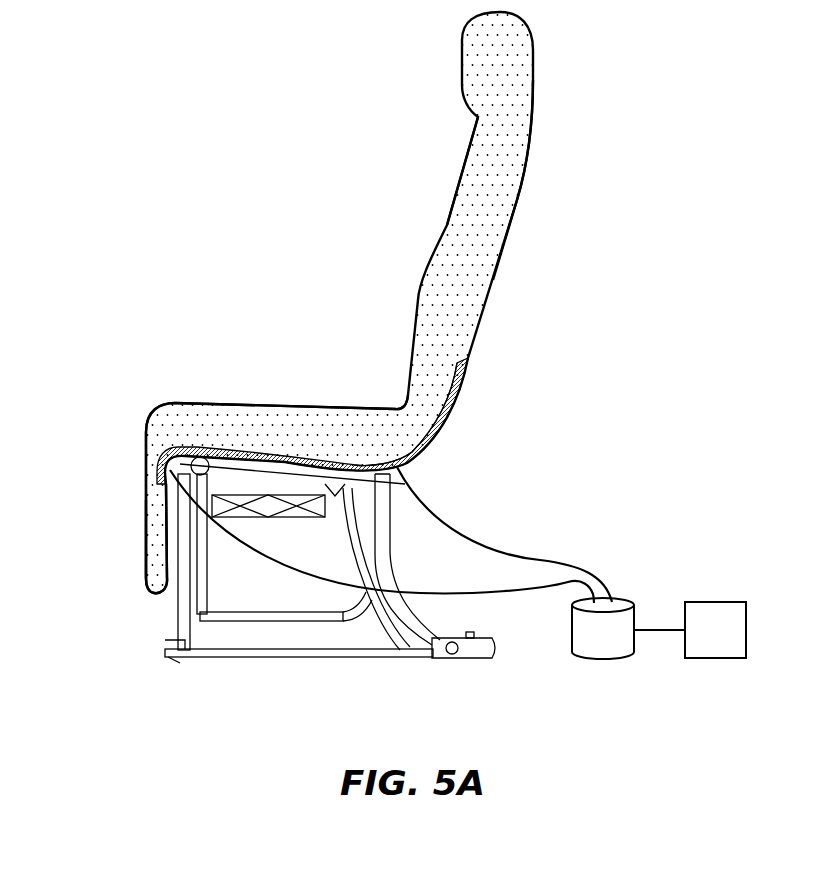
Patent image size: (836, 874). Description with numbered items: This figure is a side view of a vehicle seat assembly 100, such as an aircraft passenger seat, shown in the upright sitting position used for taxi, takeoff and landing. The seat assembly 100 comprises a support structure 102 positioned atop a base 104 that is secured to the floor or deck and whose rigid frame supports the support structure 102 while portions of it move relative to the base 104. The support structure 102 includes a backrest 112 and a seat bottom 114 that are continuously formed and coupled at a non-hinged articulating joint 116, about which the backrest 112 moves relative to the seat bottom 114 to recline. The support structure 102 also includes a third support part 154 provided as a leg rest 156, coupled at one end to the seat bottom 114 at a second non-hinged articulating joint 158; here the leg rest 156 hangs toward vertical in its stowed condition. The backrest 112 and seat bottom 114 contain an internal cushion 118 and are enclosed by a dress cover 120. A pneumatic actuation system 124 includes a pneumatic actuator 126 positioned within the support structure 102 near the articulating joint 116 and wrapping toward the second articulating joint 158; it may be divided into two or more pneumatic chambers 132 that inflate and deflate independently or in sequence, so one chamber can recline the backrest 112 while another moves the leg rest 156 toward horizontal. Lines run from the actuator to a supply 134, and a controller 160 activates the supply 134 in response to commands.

The vehicle seat assembly 100 is at (247, 202).
The support structure 102 is at (412, 290).
The base 104 is at (168, 606).
The backrest 112 is at (450, 215).
The seat bottom 114 is at (248, 400).
The articulating joint 116 is at (400, 403).
The internal cushion 118 is at (508, 165).
The dress cover 120 is at (515, 207).
The pneumatic actuation system 124 is at (656, 578).
The pneumatic actuator 126 is at (455, 412).
The pneumatic chambers 132 is at (435, 450).
The supply 134 is at (584, 650).
The third support part 154 is at (125, 470).
The leg rest 156 is at (146, 538).
The second non-hinged articulating joint 158 is at (162, 408).
The controller 160 is at (696, 638).